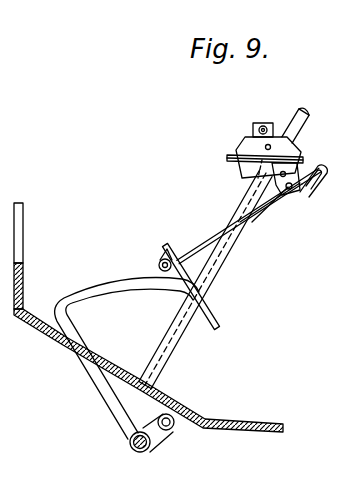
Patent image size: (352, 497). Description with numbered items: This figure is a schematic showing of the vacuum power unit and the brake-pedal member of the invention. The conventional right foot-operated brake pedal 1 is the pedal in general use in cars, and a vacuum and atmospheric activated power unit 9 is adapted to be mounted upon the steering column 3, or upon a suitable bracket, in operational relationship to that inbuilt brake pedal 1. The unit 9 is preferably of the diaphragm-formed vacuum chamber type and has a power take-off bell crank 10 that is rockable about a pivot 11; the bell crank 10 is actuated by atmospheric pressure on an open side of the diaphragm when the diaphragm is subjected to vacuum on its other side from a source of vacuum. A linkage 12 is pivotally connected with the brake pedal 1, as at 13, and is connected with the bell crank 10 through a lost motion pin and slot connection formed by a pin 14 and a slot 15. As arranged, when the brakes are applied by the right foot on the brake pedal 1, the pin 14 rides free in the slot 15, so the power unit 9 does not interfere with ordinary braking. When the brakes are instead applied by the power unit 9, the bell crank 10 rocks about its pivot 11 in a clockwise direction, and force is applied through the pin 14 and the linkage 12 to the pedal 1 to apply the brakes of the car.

The brake pedal 1 is at (195, 299).
The steering column 3 is at (176, 336).
The vacuum and atmospheric activated power unit 9 is at (230, 173).
The power take-off bell crank 10 is at (297, 190).
The pivot 11 is at (270, 128).
The linkage 12 is at (211, 232).
The pivotal connection 13 is at (158, 262).
The pin 14 is at (277, 206).
The slot 15 is at (314, 173).